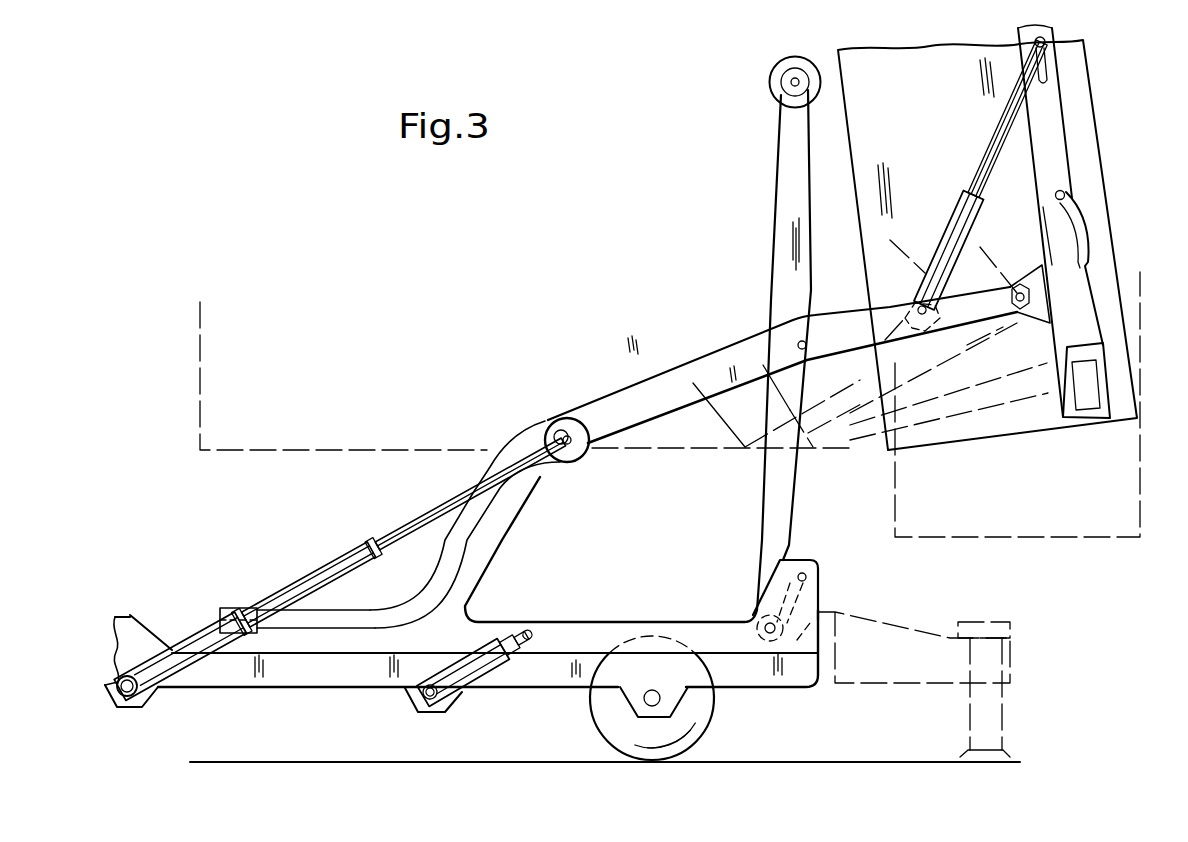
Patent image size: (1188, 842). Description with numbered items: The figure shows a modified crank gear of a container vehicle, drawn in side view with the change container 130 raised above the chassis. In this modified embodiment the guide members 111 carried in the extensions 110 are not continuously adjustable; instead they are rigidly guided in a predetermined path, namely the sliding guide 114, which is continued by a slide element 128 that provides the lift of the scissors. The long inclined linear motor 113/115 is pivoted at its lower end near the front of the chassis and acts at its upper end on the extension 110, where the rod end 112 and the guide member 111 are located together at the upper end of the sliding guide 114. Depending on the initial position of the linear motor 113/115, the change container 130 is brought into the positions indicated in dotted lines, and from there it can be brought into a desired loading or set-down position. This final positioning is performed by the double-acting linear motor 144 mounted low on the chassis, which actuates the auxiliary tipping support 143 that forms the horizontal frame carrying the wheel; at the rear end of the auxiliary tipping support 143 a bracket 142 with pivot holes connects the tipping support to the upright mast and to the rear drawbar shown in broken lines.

The extension 110 is at (533, 492).
The guide member 111 is at (568, 435).
The piston rod end 112 is at (556, 432).
The linear motor 113 is at (422, 517).
The predetermined path (sliding guide) 114 is at (442, 580).
The linear motor 115 is at (203, 640).
The slide element 128 is at (302, 605).
The change container 130 is at (914, 117).
The rear bracket 142 is at (808, 575).
The auxiliary tipping support 143 is at (595, 632).
The double-acting linear motor 144 is at (468, 677).